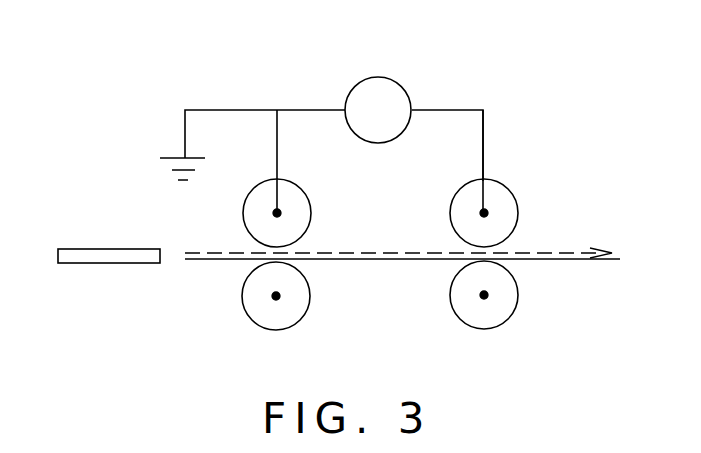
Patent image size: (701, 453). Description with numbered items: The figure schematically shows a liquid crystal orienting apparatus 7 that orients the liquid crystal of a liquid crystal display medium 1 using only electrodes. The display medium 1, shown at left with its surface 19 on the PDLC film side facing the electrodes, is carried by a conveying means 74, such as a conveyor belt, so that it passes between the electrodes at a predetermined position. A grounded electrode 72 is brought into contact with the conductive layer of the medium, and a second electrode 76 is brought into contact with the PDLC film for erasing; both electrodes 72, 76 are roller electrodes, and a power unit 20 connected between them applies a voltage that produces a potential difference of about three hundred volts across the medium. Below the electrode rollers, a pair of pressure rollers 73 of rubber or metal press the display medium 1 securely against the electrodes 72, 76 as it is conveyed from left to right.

The liquid crystal display medium 1 is at (105, 272).
The liquid crystal orienting apparatus 7 is at (503, 98).
The surface 19 is at (88, 248).
The power unit 20 is at (400, 82).
The grounded electrode 72 is at (303, 193).
The pressure rollers 73 is at (303, 318).
The conveying means 74 is at (370, 260).
The electrode 76 is at (510, 193).